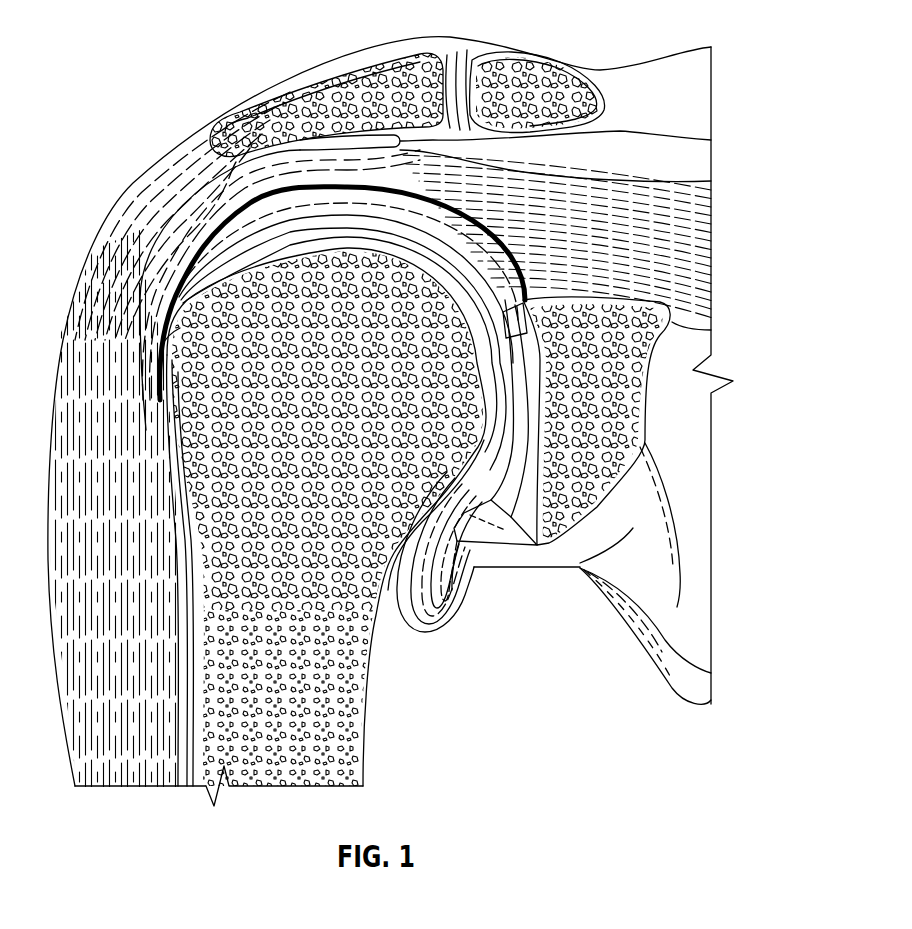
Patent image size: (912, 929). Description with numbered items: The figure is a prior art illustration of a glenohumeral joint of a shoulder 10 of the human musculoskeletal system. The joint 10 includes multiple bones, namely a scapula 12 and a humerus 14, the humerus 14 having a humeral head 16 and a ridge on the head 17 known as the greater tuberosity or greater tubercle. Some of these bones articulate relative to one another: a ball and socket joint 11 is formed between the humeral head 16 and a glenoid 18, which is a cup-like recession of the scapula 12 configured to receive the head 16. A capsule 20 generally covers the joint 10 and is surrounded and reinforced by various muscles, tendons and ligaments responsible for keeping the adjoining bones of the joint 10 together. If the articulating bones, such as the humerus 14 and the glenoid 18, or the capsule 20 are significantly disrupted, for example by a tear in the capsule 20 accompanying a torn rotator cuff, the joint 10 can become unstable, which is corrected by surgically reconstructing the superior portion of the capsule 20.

The shoulder 10 is at (222, 270).
The ball and socket joint 11 is at (505, 336).
The scapula 12 is at (630, 406).
The humerus 14 is at (307, 601).
The humeral head 16 is at (330, 354).
The ridge on the head 17 is at (157, 333).
The glenoid 18 is at (487, 532).
The capsule 20 is at (423, 630).